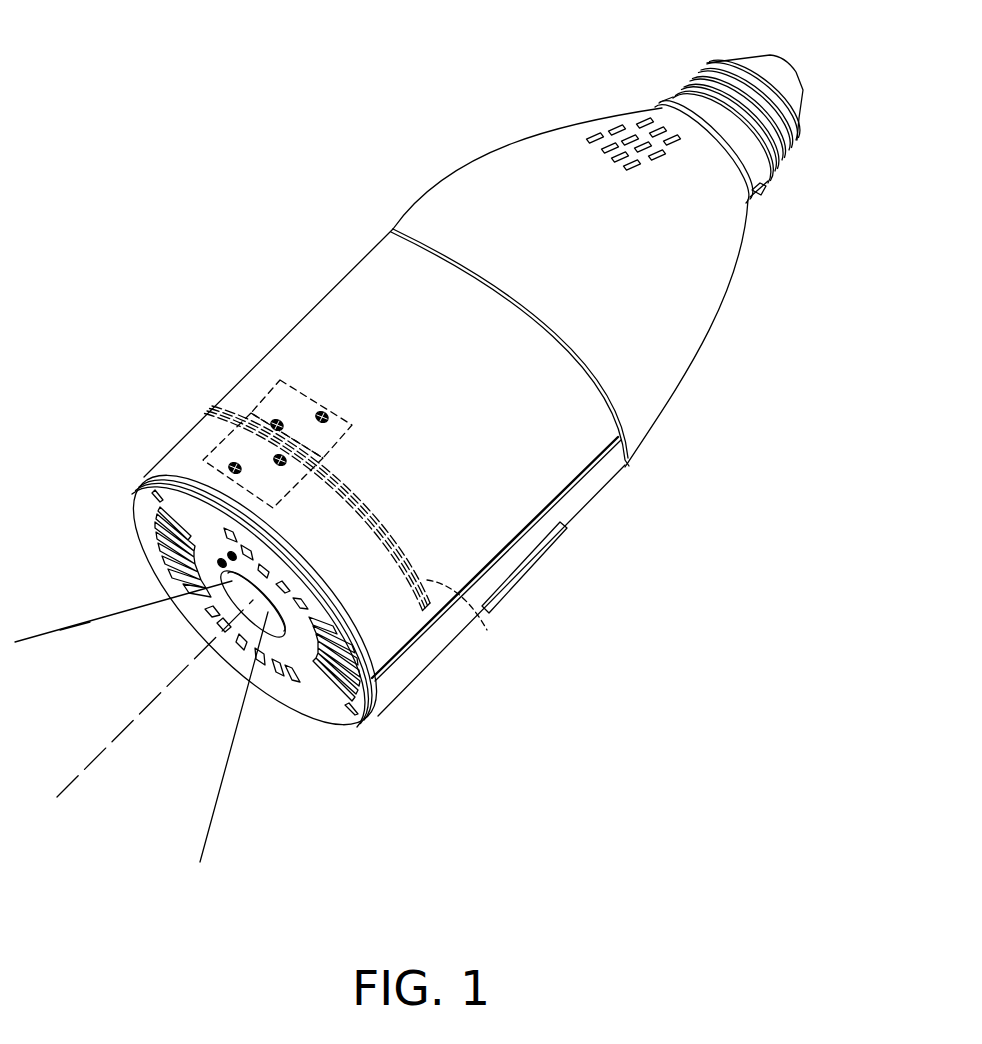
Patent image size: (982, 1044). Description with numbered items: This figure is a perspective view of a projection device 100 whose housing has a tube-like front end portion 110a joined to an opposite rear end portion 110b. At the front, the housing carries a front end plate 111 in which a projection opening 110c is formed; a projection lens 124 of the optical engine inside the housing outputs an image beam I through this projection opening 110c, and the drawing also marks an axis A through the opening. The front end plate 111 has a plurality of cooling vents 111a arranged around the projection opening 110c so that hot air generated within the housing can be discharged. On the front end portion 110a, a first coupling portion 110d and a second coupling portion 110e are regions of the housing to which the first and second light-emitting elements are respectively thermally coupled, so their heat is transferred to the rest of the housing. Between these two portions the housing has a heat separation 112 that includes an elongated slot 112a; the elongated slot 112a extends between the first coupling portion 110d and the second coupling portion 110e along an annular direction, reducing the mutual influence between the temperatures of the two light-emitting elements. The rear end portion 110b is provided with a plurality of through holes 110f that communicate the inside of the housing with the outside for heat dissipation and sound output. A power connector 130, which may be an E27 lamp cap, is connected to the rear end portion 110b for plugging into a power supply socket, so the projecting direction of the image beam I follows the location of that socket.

The projection device 100 is at (291, 208).
The front end portion 110a is at (313, 333).
The rear end portion 110b is at (541, 150).
The projection opening 110c is at (228, 579).
The first coupling portion 110d is at (222, 444).
The second coupling portion 110e is at (272, 395).
The through holes 110f is at (619, 128).
The front end plate 111 is at (365, 717).
The cooling vents 111a is at (313, 685).
The heat separation 112 is at (470, 608).
The elongated slot 112a is at (413, 566).
The projection lens 124 is at (263, 618).
The power connector 130 is at (664, 100).
The image beam I is at (88, 624).
The optical axis A is at (96, 760).